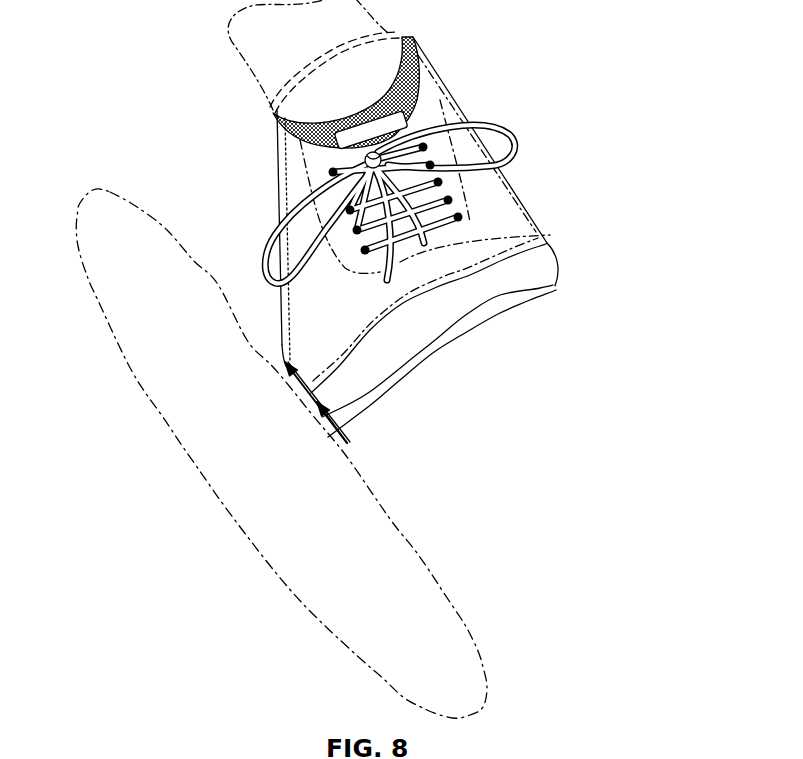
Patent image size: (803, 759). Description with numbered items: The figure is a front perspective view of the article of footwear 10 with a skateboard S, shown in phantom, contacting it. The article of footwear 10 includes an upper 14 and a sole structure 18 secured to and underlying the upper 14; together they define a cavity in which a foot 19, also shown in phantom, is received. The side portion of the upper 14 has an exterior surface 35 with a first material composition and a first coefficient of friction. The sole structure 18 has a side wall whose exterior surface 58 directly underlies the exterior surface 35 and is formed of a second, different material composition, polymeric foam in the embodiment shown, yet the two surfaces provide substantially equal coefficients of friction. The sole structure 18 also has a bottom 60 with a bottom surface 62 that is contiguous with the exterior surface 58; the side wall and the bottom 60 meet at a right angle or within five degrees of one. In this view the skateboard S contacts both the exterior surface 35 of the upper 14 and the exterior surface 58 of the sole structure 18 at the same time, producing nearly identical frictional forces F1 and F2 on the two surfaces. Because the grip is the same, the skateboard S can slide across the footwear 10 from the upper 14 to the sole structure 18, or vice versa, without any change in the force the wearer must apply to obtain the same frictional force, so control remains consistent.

The article of footwear 10 is at (556, 36).
The upper 14 is at (424, 64).
The sole structure 18 is at (553, 268).
The foot 19 is at (513, 175).
The exterior surface 35 is at (277, 379).
The exterior surface 58 is at (312, 424).
The bottom 60 is at (512, 303).
The bottom surface 62 is at (450, 338).
The frictional force F1 is at (288, 386).
The frictional force F2 is at (333, 443).
The skateboard S is at (406, 520).